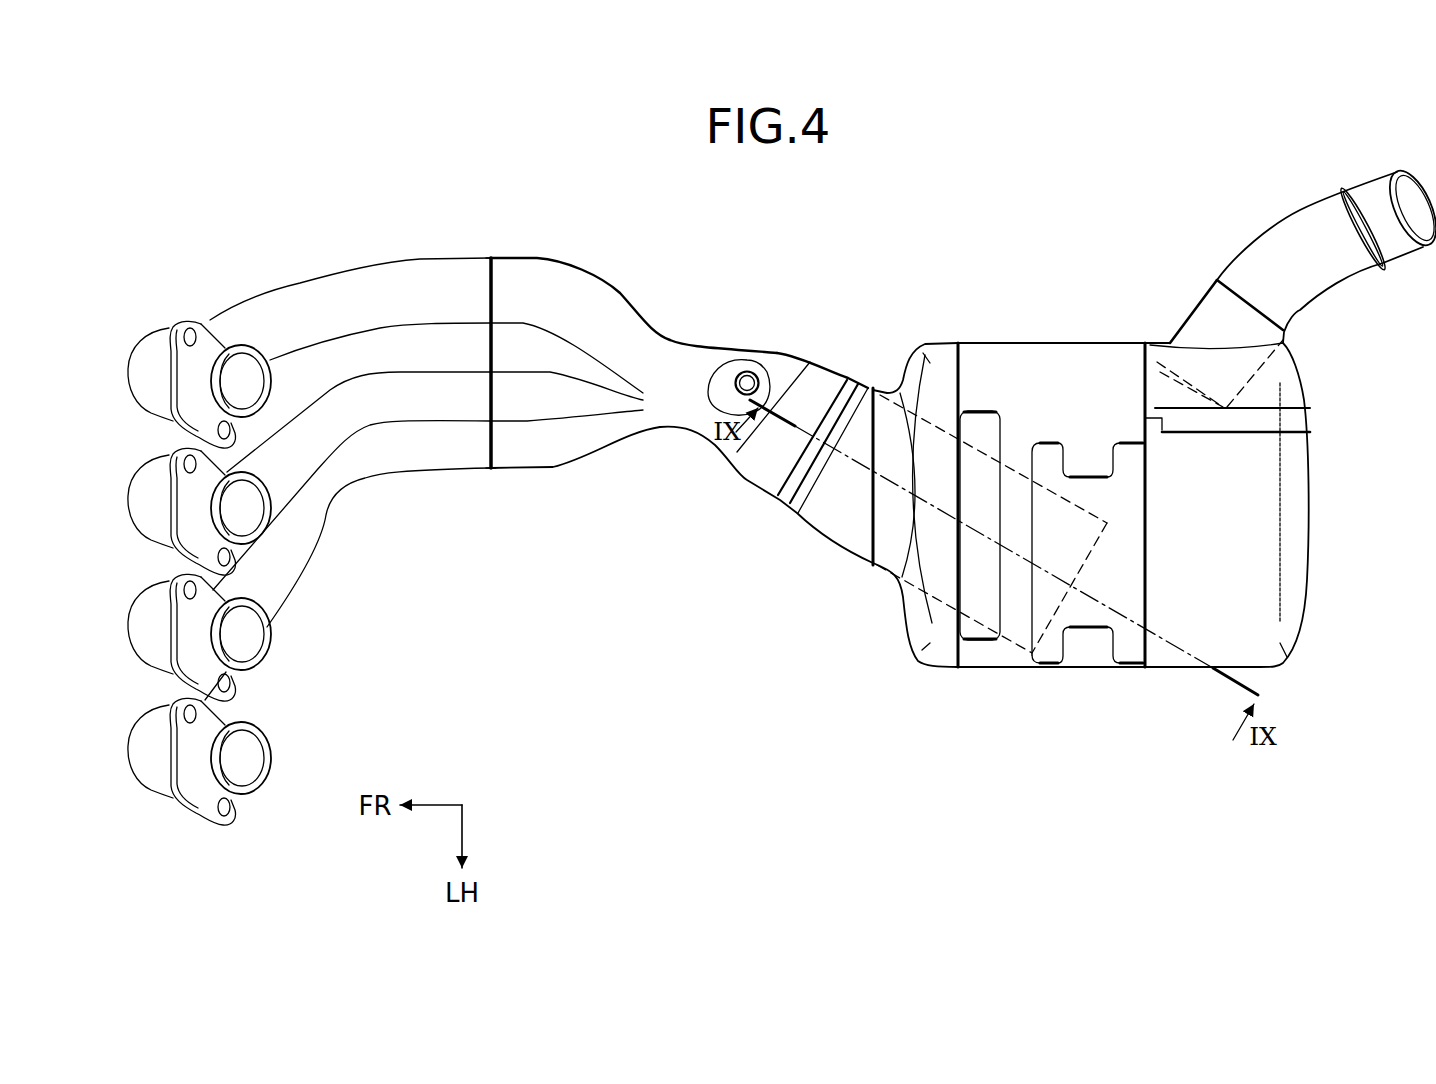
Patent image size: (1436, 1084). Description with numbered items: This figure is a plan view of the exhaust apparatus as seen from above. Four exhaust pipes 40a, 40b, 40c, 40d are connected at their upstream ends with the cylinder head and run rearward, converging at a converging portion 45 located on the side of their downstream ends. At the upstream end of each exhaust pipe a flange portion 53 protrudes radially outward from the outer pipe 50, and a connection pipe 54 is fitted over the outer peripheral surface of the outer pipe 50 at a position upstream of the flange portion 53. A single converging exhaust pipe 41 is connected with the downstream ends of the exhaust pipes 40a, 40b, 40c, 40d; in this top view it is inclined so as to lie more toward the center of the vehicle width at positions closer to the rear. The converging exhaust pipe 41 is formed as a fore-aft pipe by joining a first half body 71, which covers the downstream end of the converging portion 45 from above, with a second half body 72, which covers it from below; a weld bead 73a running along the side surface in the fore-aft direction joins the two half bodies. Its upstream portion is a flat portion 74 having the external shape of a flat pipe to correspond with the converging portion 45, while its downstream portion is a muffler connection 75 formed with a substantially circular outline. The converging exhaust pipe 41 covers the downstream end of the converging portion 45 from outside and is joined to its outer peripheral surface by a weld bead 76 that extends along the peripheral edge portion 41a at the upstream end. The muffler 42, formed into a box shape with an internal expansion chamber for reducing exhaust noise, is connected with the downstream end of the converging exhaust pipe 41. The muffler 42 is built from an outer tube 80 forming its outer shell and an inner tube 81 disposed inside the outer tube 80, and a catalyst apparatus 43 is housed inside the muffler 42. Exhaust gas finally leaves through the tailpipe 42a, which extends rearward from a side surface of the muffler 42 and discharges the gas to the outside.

The exhaust pipe 40a is at (300, 293).
The exhaust pipe 40b is at (333, 352).
The exhaust pipe 40c is at (348, 420).
The exhaust pipe 40d is at (393, 477).
The converging exhaust pipe 41 is at (625, 294).
The peripheral edge portion 41a is at (487, 443).
The muffler 42 is at (1161, 671).
The tailpipe 42a is at (1320, 200).
The catalyst apparatus 43 is at (1017, 462).
The converging portion 45 is at (488, 254).
The outer pipe 50 is at (259, 293).
The flange portion 53 is at (174, 330).
The connection pipe 54 is at (198, 371).
The first half body 71 is at (670, 357).
The second half body 72 is at (747, 347).
The weld bead 73a is at (726, 348).
The flat portion 74 is at (547, 287).
The muffler connection 75 is at (808, 393).
The weld bead 76 is at (490, 470).
The outer tube 80 is at (1110, 340).
The inner tube 81 is at (818, 535).